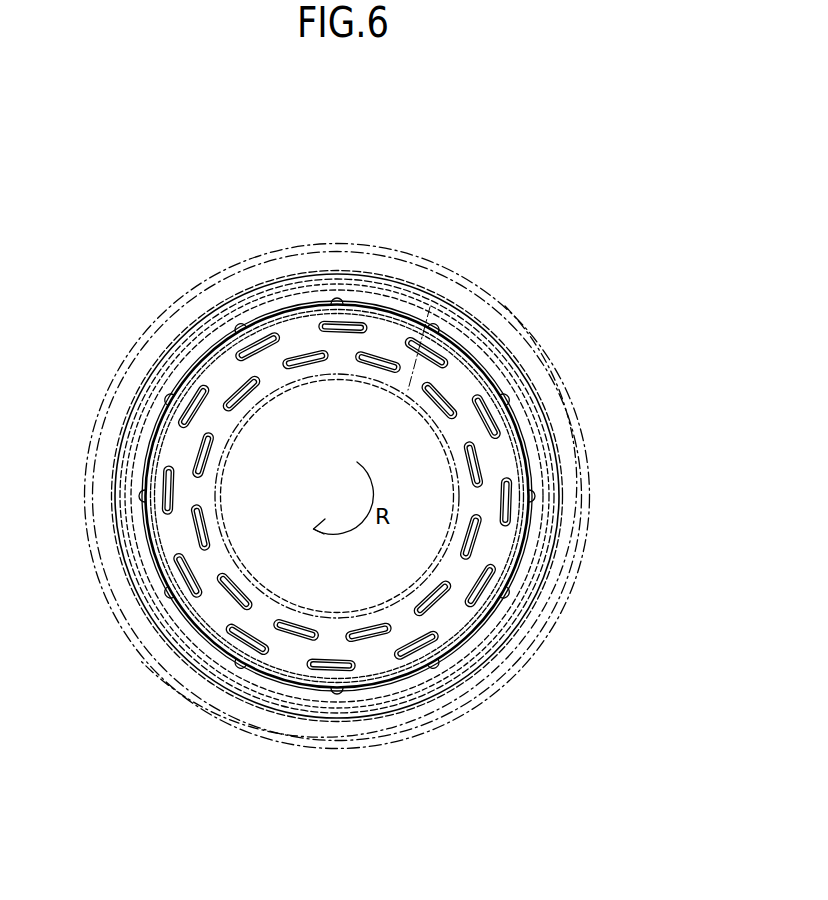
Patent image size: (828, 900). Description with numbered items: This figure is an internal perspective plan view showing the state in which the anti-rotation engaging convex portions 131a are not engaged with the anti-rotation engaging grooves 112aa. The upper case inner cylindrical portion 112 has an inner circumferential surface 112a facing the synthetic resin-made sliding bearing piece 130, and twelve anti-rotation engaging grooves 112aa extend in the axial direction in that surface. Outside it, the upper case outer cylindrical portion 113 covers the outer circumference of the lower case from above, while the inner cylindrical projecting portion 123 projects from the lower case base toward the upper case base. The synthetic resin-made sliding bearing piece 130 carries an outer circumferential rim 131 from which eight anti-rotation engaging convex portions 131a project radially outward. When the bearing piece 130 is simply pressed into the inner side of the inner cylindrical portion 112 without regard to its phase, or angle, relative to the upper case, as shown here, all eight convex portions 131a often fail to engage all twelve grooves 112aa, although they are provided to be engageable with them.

The upper case inner cylindrical portion 112 is at (155, 410).
The inner circumferential surface 112a is at (273, 313).
The anti-rotation engaging grooves 112aa is at (387, 313).
The upper case outer cylindrical portion 113 is at (175, 303).
The inner cylindrical projecting portion 123 is at (472, 317).
The synthetic resin-made sliding bearing piece 130 is at (460, 383).
The outer circumferential rim 131 is at (493, 382).
The anti-rotation engaging convex portions 131a is at (520, 423).